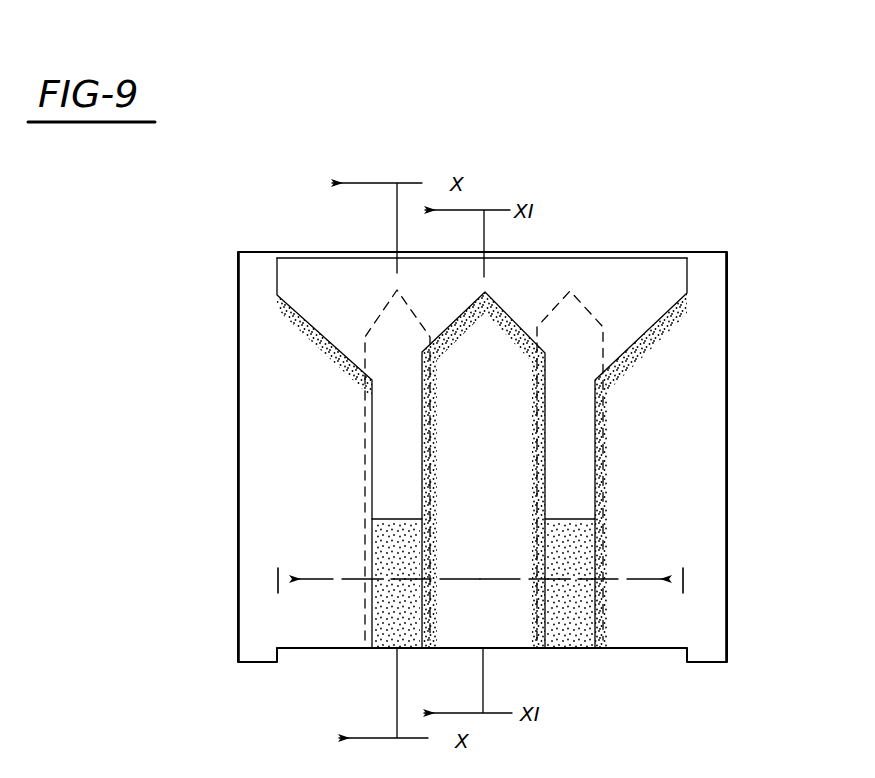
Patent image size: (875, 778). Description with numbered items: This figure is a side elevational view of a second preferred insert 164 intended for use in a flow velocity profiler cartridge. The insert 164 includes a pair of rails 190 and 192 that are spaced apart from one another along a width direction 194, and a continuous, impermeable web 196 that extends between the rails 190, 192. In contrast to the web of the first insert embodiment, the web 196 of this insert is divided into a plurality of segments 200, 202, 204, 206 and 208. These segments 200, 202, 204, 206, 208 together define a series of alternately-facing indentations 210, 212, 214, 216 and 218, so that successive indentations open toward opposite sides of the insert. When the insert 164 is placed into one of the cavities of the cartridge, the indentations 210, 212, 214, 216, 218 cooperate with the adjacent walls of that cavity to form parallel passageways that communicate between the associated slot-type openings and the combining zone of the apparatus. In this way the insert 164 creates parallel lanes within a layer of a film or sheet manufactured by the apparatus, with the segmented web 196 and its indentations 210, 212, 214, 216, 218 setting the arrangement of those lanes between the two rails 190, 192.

The second preferred insert 164 is at (214, 606).
The rail 190 is at (255, 302).
The rail 192 is at (707, 293).
The width direction 194 is at (412, 580).
The continuous, impermeable web 196 is at (638, 273).
The segment 200 is at (300, 428).
The segment 202 is at (368, 298).
The segment 204 is at (512, 507).
The segment 206 is at (575, 290).
The segment 208 is at (665, 368).
The indentation 210 is at (340, 540).
The indentation 212 is at (404, 481).
The indentation 214 is at (494, 560).
The indentation 216 is at (578, 490).
The indentation 218 is at (640, 528).